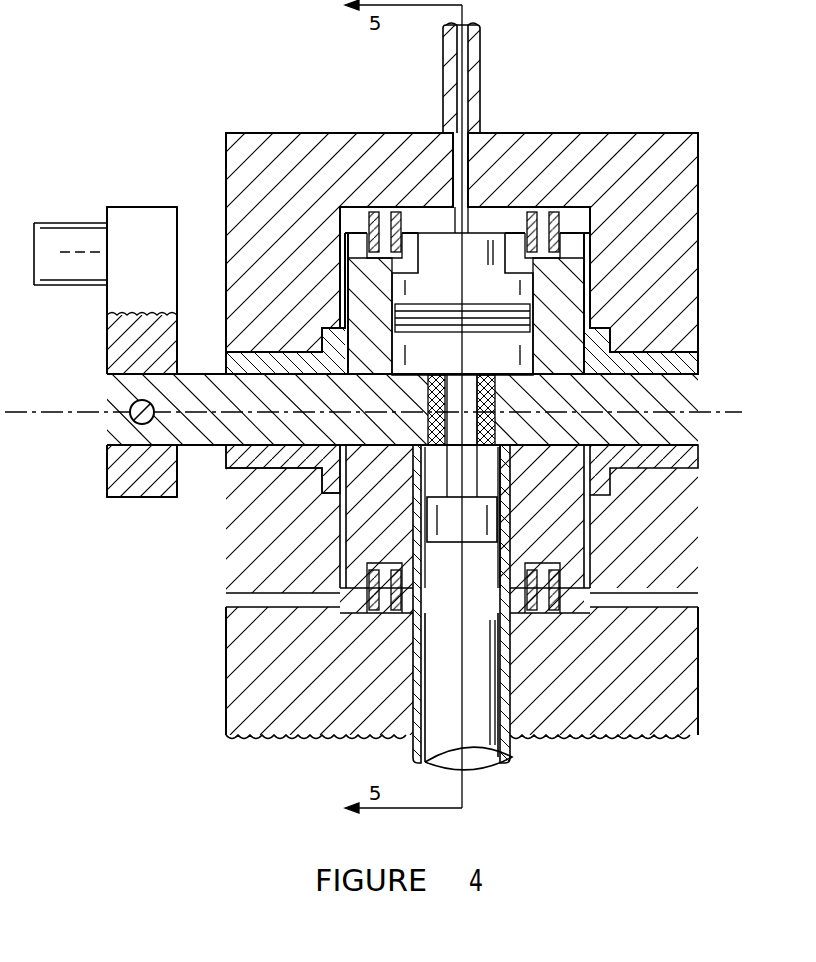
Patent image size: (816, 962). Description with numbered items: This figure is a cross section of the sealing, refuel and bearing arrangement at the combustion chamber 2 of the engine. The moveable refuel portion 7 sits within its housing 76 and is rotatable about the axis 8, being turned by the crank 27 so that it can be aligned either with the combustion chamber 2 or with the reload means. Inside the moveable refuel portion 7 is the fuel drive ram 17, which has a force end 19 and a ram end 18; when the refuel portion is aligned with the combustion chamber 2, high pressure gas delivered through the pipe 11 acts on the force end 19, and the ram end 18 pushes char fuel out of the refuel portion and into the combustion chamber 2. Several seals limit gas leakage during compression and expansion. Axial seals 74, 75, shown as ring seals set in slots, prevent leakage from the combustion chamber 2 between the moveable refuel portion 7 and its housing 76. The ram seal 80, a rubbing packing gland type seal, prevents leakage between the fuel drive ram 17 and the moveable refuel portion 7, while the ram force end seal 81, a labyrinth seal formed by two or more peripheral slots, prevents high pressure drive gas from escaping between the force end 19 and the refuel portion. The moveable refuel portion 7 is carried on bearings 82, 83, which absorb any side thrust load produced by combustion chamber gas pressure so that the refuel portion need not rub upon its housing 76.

The combustion chamber 2 is at (487, 712).
The moveable refuel portion 7 is at (262, 458).
The axis 8 is at (700, 412).
The pipe 11 is at (464, 100).
The fuel drive ram 17 is at (467, 372).
The ram end 18 is at (477, 517).
The force end 19 is at (512, 318).
The crank 27 is at (137, 223).
The axial seal 74 is at (377, 210).
The axial seal 75 is at (552, 207).
The housing 76 is at (648, 652).
The ram seal 80 is at (262, 320).
The ram force end seal 81 is at (342, 277).
The bearing 82 is at (655, 470).
The bearing 83 is at (415, 475).